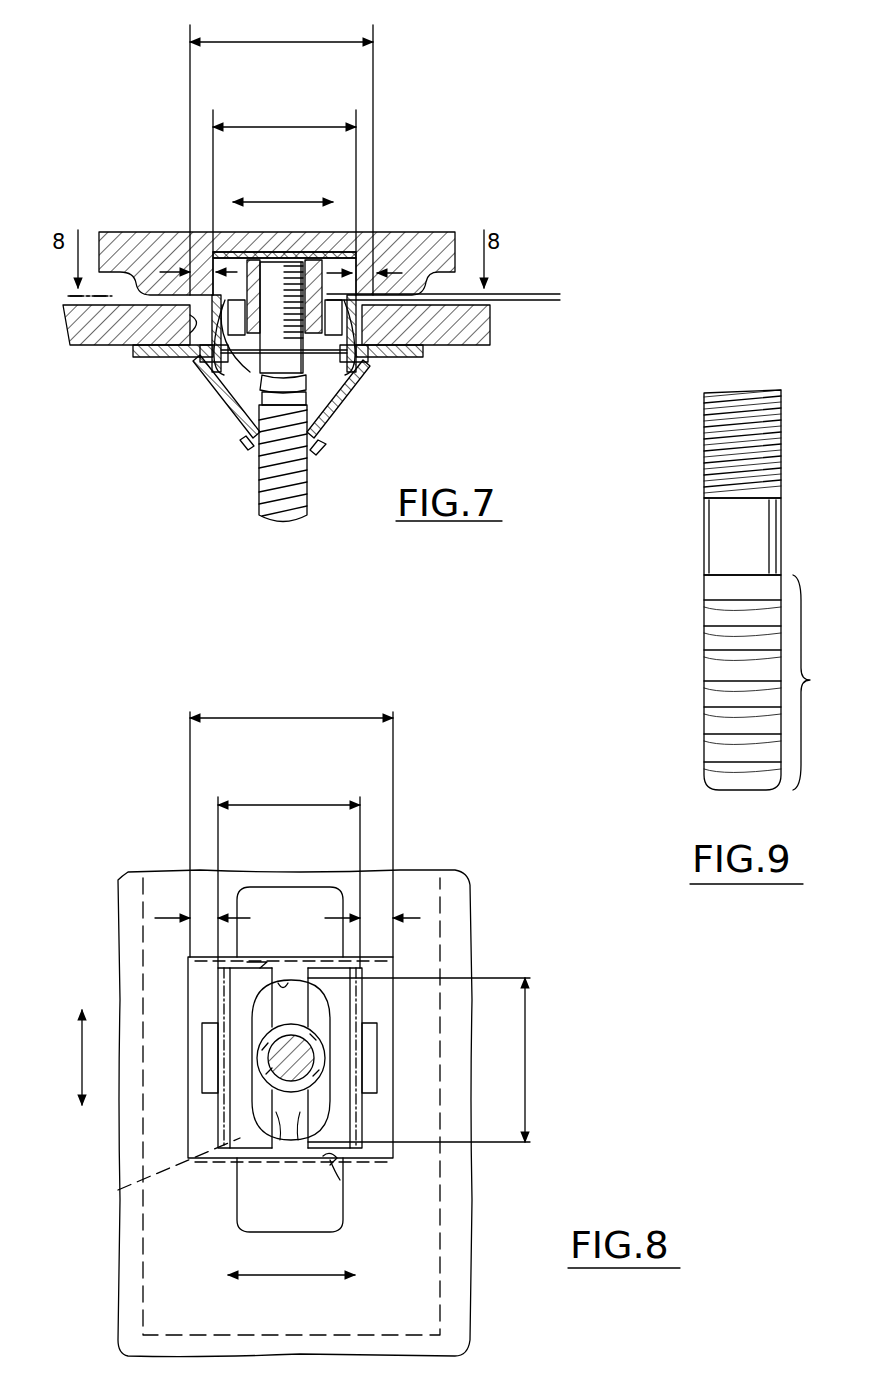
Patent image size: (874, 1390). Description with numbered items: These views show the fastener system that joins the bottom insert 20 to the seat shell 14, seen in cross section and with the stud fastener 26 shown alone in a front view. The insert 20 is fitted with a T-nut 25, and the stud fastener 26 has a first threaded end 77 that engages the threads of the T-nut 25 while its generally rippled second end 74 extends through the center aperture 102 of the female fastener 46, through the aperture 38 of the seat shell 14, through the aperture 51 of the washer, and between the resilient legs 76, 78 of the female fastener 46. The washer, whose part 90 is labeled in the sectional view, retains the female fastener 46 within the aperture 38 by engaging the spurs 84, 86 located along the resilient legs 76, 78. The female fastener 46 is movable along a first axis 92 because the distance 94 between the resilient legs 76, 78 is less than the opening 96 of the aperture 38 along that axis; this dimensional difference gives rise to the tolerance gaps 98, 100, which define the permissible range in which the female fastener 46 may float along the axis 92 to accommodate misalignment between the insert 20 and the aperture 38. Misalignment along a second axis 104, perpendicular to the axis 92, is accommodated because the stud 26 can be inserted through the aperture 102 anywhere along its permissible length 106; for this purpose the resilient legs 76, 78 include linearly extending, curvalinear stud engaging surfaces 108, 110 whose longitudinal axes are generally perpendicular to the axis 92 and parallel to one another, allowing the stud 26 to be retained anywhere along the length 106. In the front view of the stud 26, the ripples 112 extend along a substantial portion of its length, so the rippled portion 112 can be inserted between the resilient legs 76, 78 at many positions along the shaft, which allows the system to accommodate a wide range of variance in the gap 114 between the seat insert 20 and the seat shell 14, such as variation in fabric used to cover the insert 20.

In FIG. 7, the seat shell 14 is at (60, 302).
In FIG. 7, the bottom insert 20 is at (440, 232).
In FIG. 7, the T-nut 25 is at (226, 252).
In FIG. 7, the stud fastener 26 is at (313, 392).
In FIG. 9, the stud fastener 26 is at (662, 553).
In FIG. 8, the stud fastener 26 is at (291, 1058).
In FIG. 7, the aperture of seat shell 38 is at (160, 322).
In FIG. 8, the aperture of seat shell 38 is at (395, 968).
In FIG. 7, the female fastener 46 is at (188, 440).
In FIG. 8, the female fastener 46 is at (385, 1108).
In FIG. 7, the aperture of washer 51 is at (213, 368).
In FIG. 8, the aperture of washer 51 is at (190, 975).
In FIG. 9, the second end of stud 74 is at (700, 700).
In FIG. 7, the resilient leg 76 is at (240, 410).
In FIG. 8, the resilient leg 76 is at (100, 1200).
In FIG. 9, the threaded portion 77 is at (770, 443).
In FIG. 7, the resilient leg 78 is at (334, 430).
In FIG. 8, the resilient leg 78 is at (370, 1162).
In FIG. 7, the spur 84 is at (200, 362).
In FIG. 8, the spur 84 is at (205, 1072).
In FIG. 7, the spur 86 is at (372, 358).
In FIG. 8, the spur 86 is at (375, 1050).
In FIG. 7, the retaining plate 90 is at (75, 348).
In FIG. 7, the first axis 92 is at (284, 202).
In FIG. 8, the first axis 92 is at (302, 1276).
In FIG. 7, the distance between resilient legs 94 is at (286, 127).
In FIG. 8, the distance between resilient legs 94 is at (288, 805).
In FIG. 7, the opening of aperture 96 is at (290, 42).
In FIG. 8, the opening of aperture 96 is at (296, 718).
In FIG. 7, the tolerance gap 98 is at (200, 268).
In FIG. 8, the tolerance gap 98 is at (200, 915).
In FIG. 7, the tolerance gap 100 is at (392, 232).
In FIG. 8, the tolerance gap 100 is at (375, 915).
In FIG. 7, the center aperture 102 is at (232, 385).
In FIG. 8, the center aperture 102 is at (281, 983).
In FIG. 8, the second axis 104 is at (80, 1050).
In FIG. 8, the permissible length 106 is at (525, 1045).
In FIG. 8, the stud engaging surface 108 is at (265, 1138).
In FIG. 8, the stud engaging surface 110 is at (300, 1135).
In FIG. 9, the ripples 112 is at (824, 682).
In FIG. 7, the gap 114 is at (457, 293).